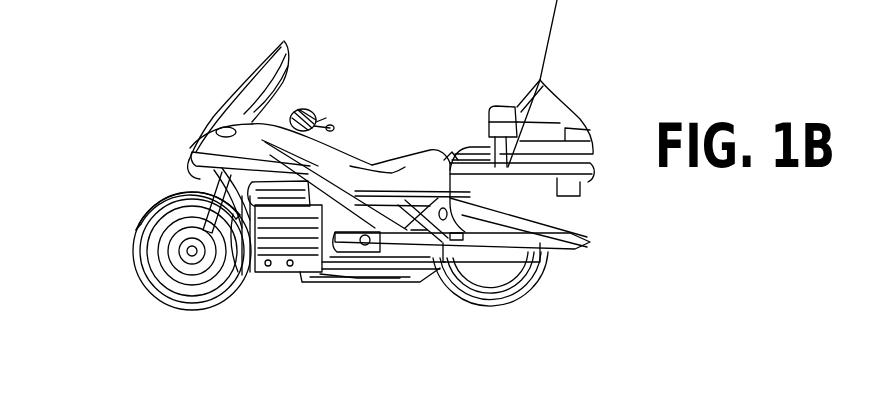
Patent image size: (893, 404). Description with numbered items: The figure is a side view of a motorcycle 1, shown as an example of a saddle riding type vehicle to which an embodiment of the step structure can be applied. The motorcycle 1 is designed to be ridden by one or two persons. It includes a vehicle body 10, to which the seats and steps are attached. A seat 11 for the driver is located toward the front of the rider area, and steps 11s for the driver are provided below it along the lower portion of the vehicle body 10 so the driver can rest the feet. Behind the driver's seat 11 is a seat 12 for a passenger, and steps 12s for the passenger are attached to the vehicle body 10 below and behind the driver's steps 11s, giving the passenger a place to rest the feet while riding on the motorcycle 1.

The motorcycle 1 is at (150, 85).
The vehicle body 10 is at (430, 205).
The seat for a driver 11 is at (390, 170).
The steps for the driver 11s is at (357, 278).
The seat for a passenger 12 is at (452, 152).
The steps for the passenger 12s is at (419, 230).